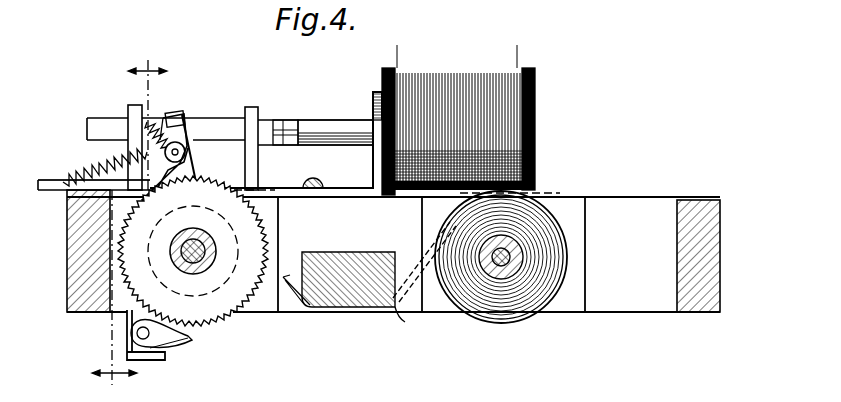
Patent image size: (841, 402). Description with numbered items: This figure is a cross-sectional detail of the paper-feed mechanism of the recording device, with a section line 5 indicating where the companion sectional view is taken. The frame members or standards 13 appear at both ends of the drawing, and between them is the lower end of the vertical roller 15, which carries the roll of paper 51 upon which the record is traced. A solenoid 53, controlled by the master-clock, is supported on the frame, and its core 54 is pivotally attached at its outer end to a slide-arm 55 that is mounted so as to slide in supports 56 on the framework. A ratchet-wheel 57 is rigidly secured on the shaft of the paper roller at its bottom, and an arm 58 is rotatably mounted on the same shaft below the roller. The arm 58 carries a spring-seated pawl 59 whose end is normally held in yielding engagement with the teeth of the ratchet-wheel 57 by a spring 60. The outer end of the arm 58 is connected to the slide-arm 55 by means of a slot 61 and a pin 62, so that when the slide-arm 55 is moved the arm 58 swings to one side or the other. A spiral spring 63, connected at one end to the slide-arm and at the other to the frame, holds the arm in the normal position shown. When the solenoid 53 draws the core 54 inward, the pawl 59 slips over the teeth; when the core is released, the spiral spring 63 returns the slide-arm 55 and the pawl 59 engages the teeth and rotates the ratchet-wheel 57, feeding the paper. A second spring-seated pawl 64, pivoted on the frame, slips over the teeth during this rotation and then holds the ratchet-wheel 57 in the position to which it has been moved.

The section line 5- 5 is at (129, 222).
The standards 13 is at (67, 247).
The vertical roller 15 is at (508, 323).
The roll of paper 51 is at (405, 322).
The solenoid 53 is at (478, 82).
The core 54 is at (342, 128).
The slide-arm 55 is at (228, 130).
The supports 56 is at (128, 110).
The ratchet-wheel 57 is at (133, 293).
The arm 58 is at (190, 158).
The spring-seated pawl 59 is at (160, 198).
The spring 60 is at (112, 158).
The slot 61 is at (172, 116).
The pin 62 is at (183, 112).
The spiral spring 63 is at (65, 179).
The spring-seated pawl 64 is at (175, 340).